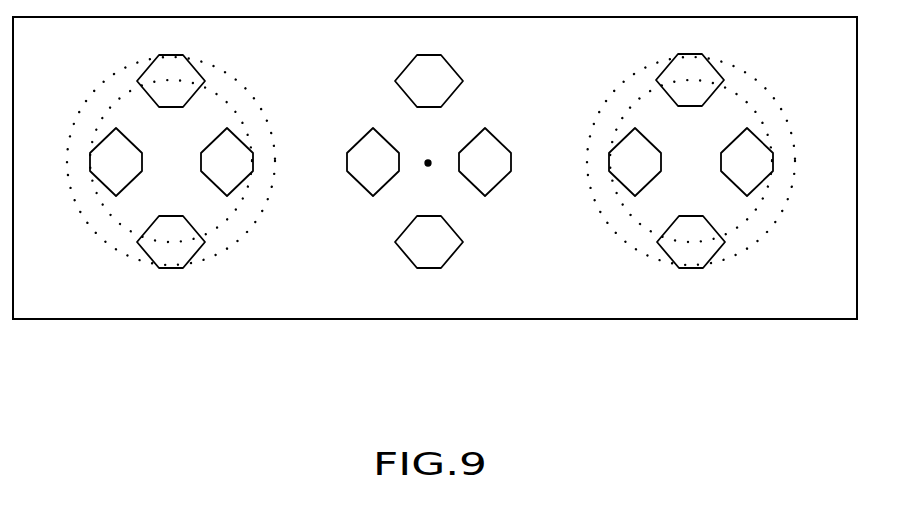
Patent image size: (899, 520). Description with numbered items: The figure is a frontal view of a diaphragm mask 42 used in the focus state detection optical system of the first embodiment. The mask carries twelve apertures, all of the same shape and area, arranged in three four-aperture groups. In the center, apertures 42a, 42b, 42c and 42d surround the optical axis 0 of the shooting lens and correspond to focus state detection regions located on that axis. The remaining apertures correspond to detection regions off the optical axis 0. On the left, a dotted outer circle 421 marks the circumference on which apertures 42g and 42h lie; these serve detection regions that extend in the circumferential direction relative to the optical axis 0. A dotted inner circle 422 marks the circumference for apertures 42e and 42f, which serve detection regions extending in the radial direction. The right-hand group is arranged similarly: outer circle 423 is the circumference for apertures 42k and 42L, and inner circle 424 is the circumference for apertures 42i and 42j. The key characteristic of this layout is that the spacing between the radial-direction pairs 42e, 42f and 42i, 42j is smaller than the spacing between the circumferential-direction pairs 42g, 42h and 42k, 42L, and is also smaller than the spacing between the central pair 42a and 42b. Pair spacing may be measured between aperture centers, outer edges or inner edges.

The diaphragm mask 42 is at (673, 320).
The aperture 42a is at (348, 170).
The aperture 42b is at (500, 143).
The aperture 42c is at (402, 73).
The aperture 42d is at (402, 250).
The aperture 42e is at (90, 168).
The aperture 42f is at (247, 143).
The aperture 42g is at (143, 73).
The aperture 42h is at (143, 250).
The aperture 42i is at (610, 168).
The aperture 42j is at (767, 143).
The aperture 42k is at (662, 73).
The aperture 42L is at (662, 253).
The outer circle 421 is at (97, 230).
The inner circle 422 is at (232, 218).
The outer circle 423 is at (615, 235).
The inner circle 424 is at (753, 212).
The optical axis 0 is at (437, 146).